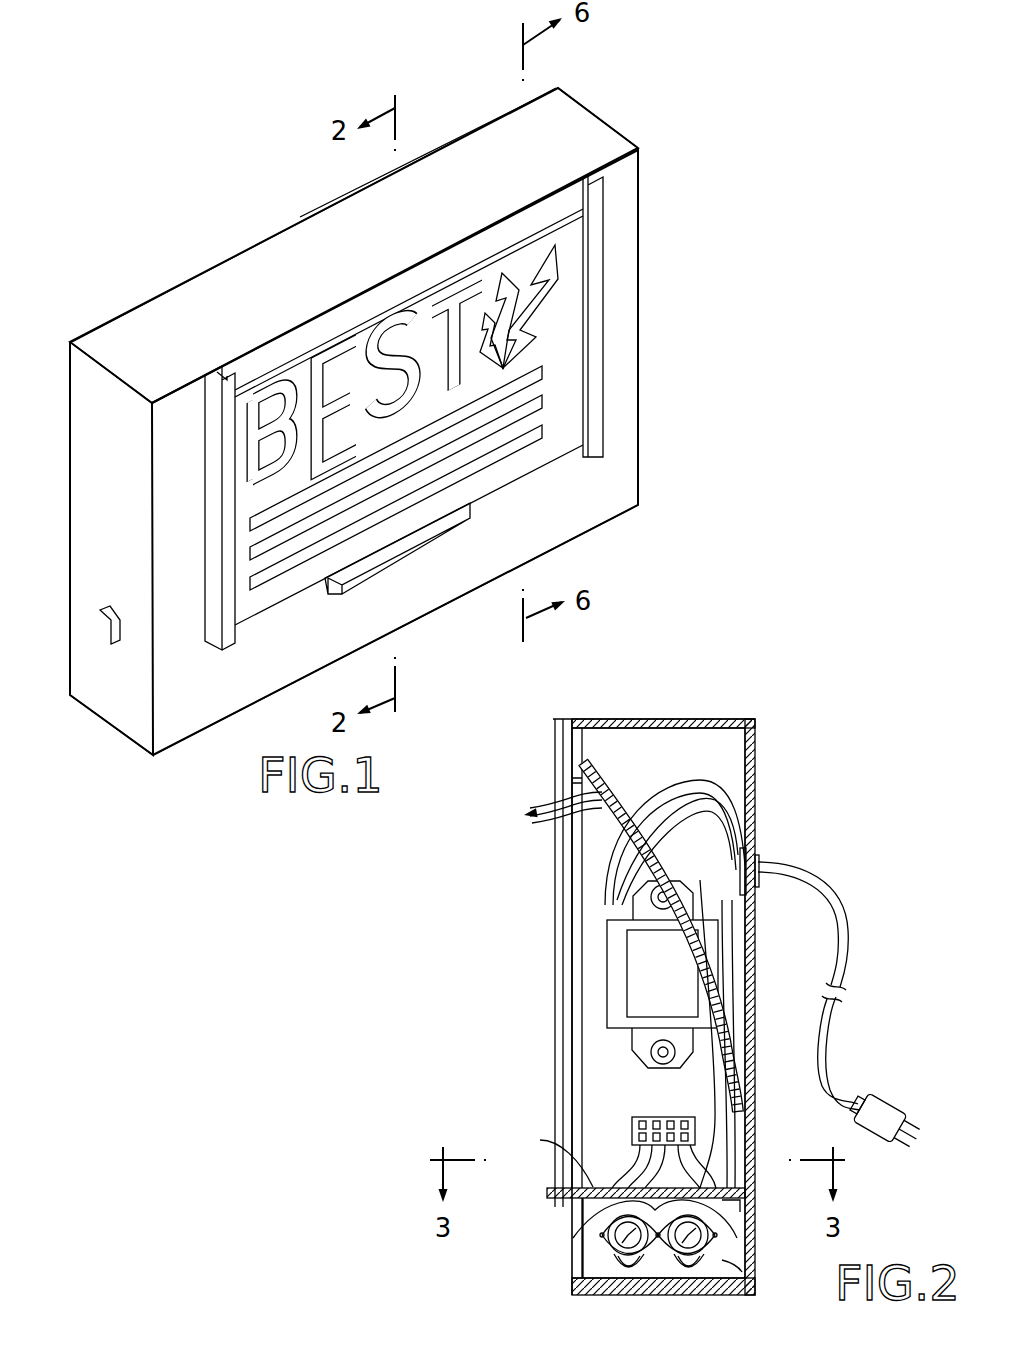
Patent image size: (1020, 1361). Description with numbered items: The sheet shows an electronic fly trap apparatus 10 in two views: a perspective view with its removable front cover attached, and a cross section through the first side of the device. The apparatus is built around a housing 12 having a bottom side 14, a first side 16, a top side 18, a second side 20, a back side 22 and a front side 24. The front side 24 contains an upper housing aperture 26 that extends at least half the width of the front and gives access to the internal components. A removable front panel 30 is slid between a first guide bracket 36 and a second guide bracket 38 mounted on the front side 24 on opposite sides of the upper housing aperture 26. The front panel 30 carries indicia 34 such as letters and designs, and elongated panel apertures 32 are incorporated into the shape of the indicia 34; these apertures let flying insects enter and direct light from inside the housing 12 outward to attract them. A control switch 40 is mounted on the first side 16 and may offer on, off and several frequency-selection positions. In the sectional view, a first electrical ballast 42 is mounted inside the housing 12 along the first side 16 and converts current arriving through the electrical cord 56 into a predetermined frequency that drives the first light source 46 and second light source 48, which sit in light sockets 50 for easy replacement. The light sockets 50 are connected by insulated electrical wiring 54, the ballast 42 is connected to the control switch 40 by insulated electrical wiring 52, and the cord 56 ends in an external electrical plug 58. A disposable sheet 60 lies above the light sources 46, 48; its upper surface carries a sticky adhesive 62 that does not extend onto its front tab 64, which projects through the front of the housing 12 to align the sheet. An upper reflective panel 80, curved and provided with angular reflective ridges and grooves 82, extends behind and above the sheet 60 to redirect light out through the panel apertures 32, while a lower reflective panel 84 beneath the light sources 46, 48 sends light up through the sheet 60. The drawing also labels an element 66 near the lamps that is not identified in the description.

In FIG. 1, the electronic fly trap apparatus 10 is at (146, 240).
In FIG. 2, the electronic fly trap apparatus 10 is at (766, 684).
In FIG. 1, the housing 12 is at (637, 431).
In FIG. 2, the housing 12 is at (770, 738).
In FIG. 1, the bottom side 14 is at (612, 517).
In FIG. 2, the bottom side 14 is at (648, 1295).
In FIG. 1, the first side 16 is at (130, 712).
In FIG. 2, the first side 16 is at (704, 746).
In FIG. 1, the top side 18 is at (126, 338).
In FIG. 2, the top side 18 is at (640, 718).
In FIG. 1, the second side 20 is at (598, 116).
In FIG. 1, the back side 22 is at (498, 116).
In FIG. 2, the back side 22 is at (750, 1024).
In FIG. 1, the front side 24 is at (622, 190).
In FIG. 2, the front side 24 is at (572, 747).
In FIG. 2, the upper housing aperture 26 is at (577, 878).
In FIG. 1, the removable front panel 30 is at (384, 312).
In FIG. 1, the panel aperture 32 is at (267, 521).
In FIG. 1, the indicia 34 is at (286, 396).
In FIG. 1, the first guide bracket 36 is at (216, 490).
In FIG. 2, the first guide bracket 36 is at (566, 933).
In FIG. 1, the second guide bracket 38 is at (596, 364).
In FIG. 1, the control switch 40 is at (110, 628).
In FIG. 2, the control switch 40 is at (632, 1128).
In FIG. 2, the first electrical ballast 42 is at (627, 975).
In FIG. 2, the first light source 46 is at (580, 1238).
In FIG. 2, the second light source 48 is at (698, 1228).
In FIG. 2, the light sockets 50 is at (577, 1220).
In FIG. 2, the insulated electrical wiring 52 is at (757, 824).
In FIG. 2, the insulated electrical wiring 54 is at (577, 1262).
In FIG. 2, the electrical cord 56 is at (833, 1030).
In FIG. 2, the external electrical plug 58 is at (892, 1104).
In FIG. 2, the disposable sheet 60 is at (580, 1163).
In FIG. 2, the sticky adhesive 62 is at (612, 1182).
In FIG. 1, the front tab 64 is at (420, 546).
In FIG. 2, the front tab 64 is at (548, 1182).
In FIG. 2, the lamp wiring 66 is at (728, 1230).
In FIG. 2, the upper reflective panel 80 is at (600, 800).
In FIG. 2, the angular reflective ridges and grooves 82 is at (552, 822).
In FIG. 2, the lower reflective panel 84 is at (725, 1262).